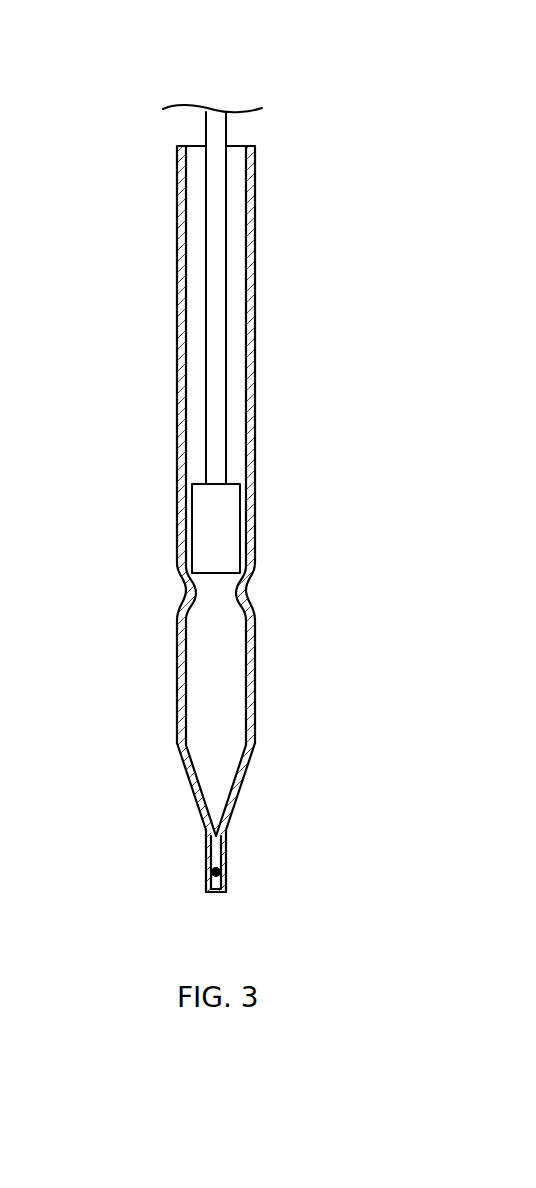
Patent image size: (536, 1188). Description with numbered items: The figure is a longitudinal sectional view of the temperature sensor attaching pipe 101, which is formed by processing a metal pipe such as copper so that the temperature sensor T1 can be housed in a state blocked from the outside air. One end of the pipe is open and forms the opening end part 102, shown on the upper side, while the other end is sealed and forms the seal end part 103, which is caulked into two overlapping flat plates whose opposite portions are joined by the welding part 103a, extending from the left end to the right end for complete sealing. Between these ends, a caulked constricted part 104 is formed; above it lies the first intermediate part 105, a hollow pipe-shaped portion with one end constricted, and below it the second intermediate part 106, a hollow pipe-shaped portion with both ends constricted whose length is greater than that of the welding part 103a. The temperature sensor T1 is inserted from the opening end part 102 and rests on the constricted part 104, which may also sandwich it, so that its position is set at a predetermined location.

The temperature sensor attaching pipe 101 is at (121, 114).
The opening end part 102 is at (232, 147).
The seal end part 103 is at (224, 855).
The welding part 103a is at (208, 875).
The constricted part 104 is at (236, 585).
The first intermediate part 105 is at (256, 271).
The second intermediate part 106 is at (256, 687).
The temperature sensor T1 is at (198, 550).